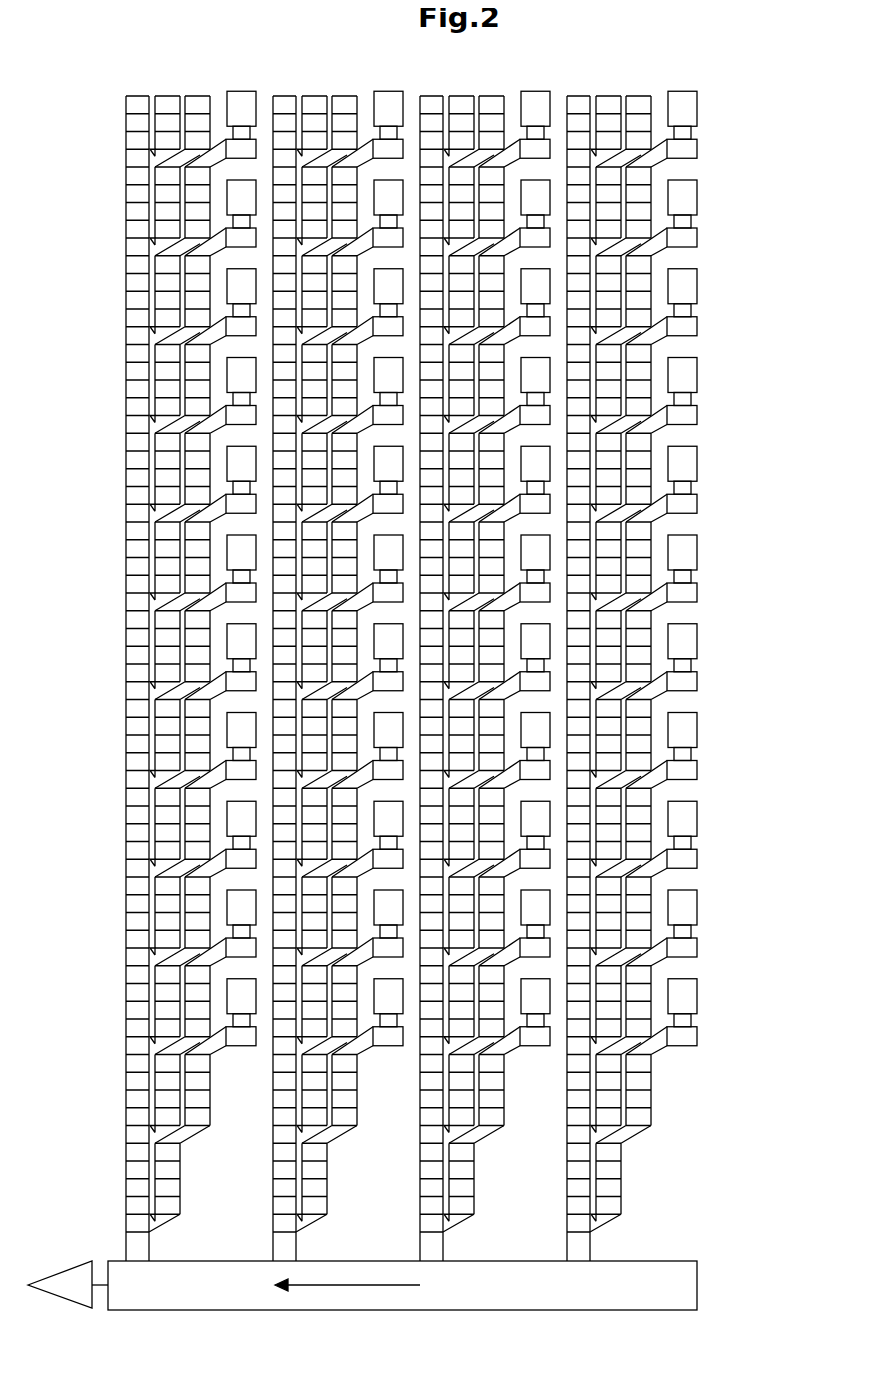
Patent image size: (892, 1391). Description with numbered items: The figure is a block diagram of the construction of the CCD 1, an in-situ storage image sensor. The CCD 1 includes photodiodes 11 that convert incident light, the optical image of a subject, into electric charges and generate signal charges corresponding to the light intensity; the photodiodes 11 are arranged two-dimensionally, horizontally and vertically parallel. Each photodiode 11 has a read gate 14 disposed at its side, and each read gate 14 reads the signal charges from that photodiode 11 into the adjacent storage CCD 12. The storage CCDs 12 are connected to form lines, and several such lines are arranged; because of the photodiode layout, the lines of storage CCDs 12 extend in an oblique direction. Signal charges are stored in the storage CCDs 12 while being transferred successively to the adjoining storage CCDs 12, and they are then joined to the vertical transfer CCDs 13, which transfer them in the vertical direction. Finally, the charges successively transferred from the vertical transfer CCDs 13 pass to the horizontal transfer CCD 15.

The CCD 1 is at (395, 687).
The photodiode 11 is at (470, 548).
The storage CCD 12 is at (400, 648).
The vertical transfer CCD 13 is at (338, 664).
The read gate 14 is at (455, 587).
The horizontal transfer CCD 15 is at (692, 1282).